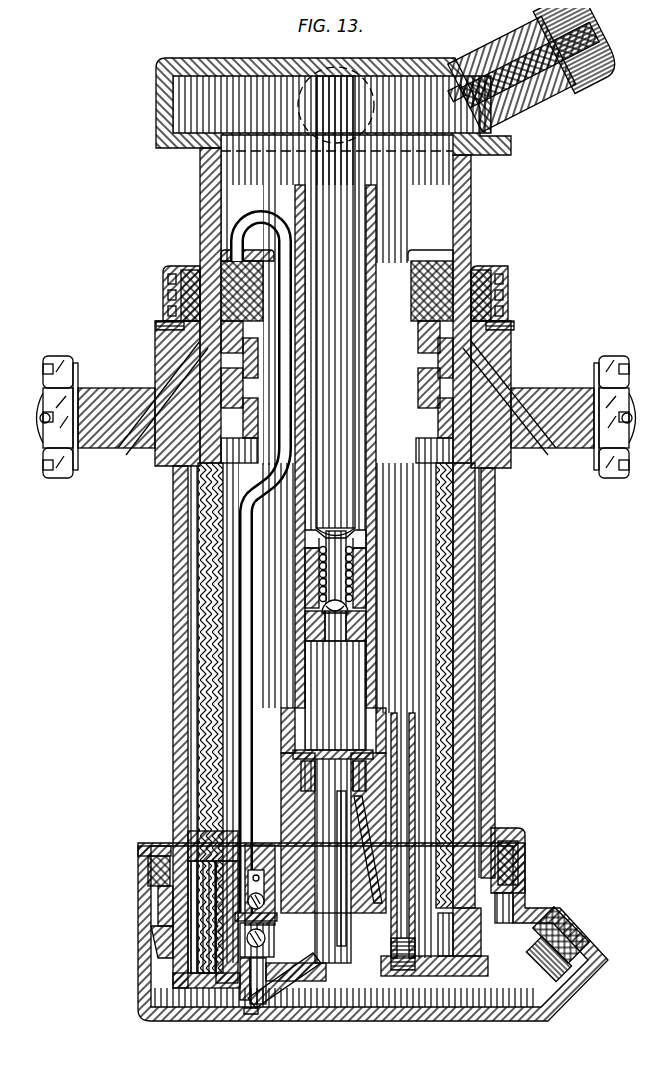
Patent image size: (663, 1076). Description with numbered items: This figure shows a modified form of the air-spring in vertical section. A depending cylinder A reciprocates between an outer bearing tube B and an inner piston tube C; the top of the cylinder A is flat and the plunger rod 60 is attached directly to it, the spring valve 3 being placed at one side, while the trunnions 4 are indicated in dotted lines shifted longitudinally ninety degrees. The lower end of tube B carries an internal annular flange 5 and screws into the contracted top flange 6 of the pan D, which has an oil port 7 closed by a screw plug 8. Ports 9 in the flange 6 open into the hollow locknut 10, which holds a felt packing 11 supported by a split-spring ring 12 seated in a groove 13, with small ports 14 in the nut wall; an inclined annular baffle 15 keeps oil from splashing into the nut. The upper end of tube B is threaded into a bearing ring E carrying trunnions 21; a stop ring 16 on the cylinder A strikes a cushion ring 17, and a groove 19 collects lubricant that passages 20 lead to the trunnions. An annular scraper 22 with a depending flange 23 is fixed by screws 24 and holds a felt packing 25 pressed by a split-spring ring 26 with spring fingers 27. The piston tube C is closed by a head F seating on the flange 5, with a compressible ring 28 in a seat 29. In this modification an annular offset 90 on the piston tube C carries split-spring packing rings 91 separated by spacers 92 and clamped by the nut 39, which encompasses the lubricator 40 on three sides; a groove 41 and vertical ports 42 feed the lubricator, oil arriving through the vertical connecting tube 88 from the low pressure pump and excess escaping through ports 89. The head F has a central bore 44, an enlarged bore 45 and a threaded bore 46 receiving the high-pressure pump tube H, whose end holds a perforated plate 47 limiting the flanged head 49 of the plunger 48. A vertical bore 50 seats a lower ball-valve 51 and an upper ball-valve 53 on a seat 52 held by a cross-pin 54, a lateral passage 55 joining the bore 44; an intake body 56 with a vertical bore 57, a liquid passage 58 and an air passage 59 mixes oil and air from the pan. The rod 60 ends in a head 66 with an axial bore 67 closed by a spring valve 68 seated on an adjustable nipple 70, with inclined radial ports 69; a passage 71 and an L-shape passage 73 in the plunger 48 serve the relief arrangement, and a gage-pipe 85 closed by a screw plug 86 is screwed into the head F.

The spring valve 3 is at (545, 92).
The trunnions 4 is at (300, 78).
The internal annular flange 5 is at (200, 980).
The contracted top flange 6 is at (158, 898).
The port 7 is at (548, 958).
The screw plug 8 is at (572, 928).
The ports 9 is at (160, 930).
The hollow locknut 10 is at (503, 830).
The packing 11 is at (507, 848).
The split-spring ring 12 is at (158, 892).
The groove 13 is at (140, 866).
The small ports 14 is at (516, 850).
The annular baffle 15 is at (140, 958).
The stop ring 16 is at (175, 823).
The cushion ring 17 is at (503, 365).
The circumferential groove 19 is at (165, 330).
The passages 20 is at (530, 442).
The trunnions 21 is at (555, 378).
The annular scraper 22 is at (160, 270).
The depending flange 23 is at (500, 303).
The screws 24 is at (506, 317).
The packing 25 is at (480, 258).
The split-spring ring 26 is at (496, 270).
The spring fingers 27 is at (496, 288).
The compressible packing ring 28 is at (452, 970).
The annular seat 29 is at (428, 962).
The nut 39 is at (455, 245).
The lubricator 40 is at (192, 258).
The annular groove 41 is at (222, 243).
The vertical ports 42 is at (420, 250).
The central vertical bore 44 is at (340, 960).
The enlarged bore 45 is at (358, 772).
The threaded bore 46 is at (368, 702).
The perforated plate 47 is at (290, 744).
The plunger 48 is at (330, 978).
The flanged head 49 is at (283, 748).
The vertical bore 50 is at (238, 918).
The ball-valve 51 is at (236, 978).
The seat 52 is at (212, 805).
The ball-valve 53 is at (257, 893).
The cross-pin 54 is at (266, 868).
The lateral passage 55 is at (266, 912).
The intake body 56 is at (302, 975).
The vertical bore 57 is at (254, 998).
The low level liquid passage 58 is at (246, 998).
The air passage 59 is at (318, 1000).
The plunger rod 60 is at (347, 158).
The head 66 is at (358, 548).
The axial bore 67 is at (340, 565).
The spring-actuated valve 68 is at (312, 600).
The inclined radial ports 69 is at (336, 500).
The nipple 70 is at (345, 616).
The passage 71 is at (346, 860).
The L-shape passage 73 is at (335, 788).
The gage-pipe 85 is at (407, 745).
The screw plug 86 is at (392, 960).
The vertical connecting tube 88 is at (236, 568).
The ports 89 is at (400, 330).
The annular offset 90 is at (405, 350).
The split-spring packing rings 91 is at (470, 445).
The spacers 92 is at (478, 460).
The cylinder A is at (450, 655).
The bearing tube B is at (487, 685).
The piston tube C is at (436, 713).
The pan D is at (228, 988).
The bearing ring E is at (148, 368).
The head F is at (298, 833).
The high-pressure pump tube H is at (368, 487).